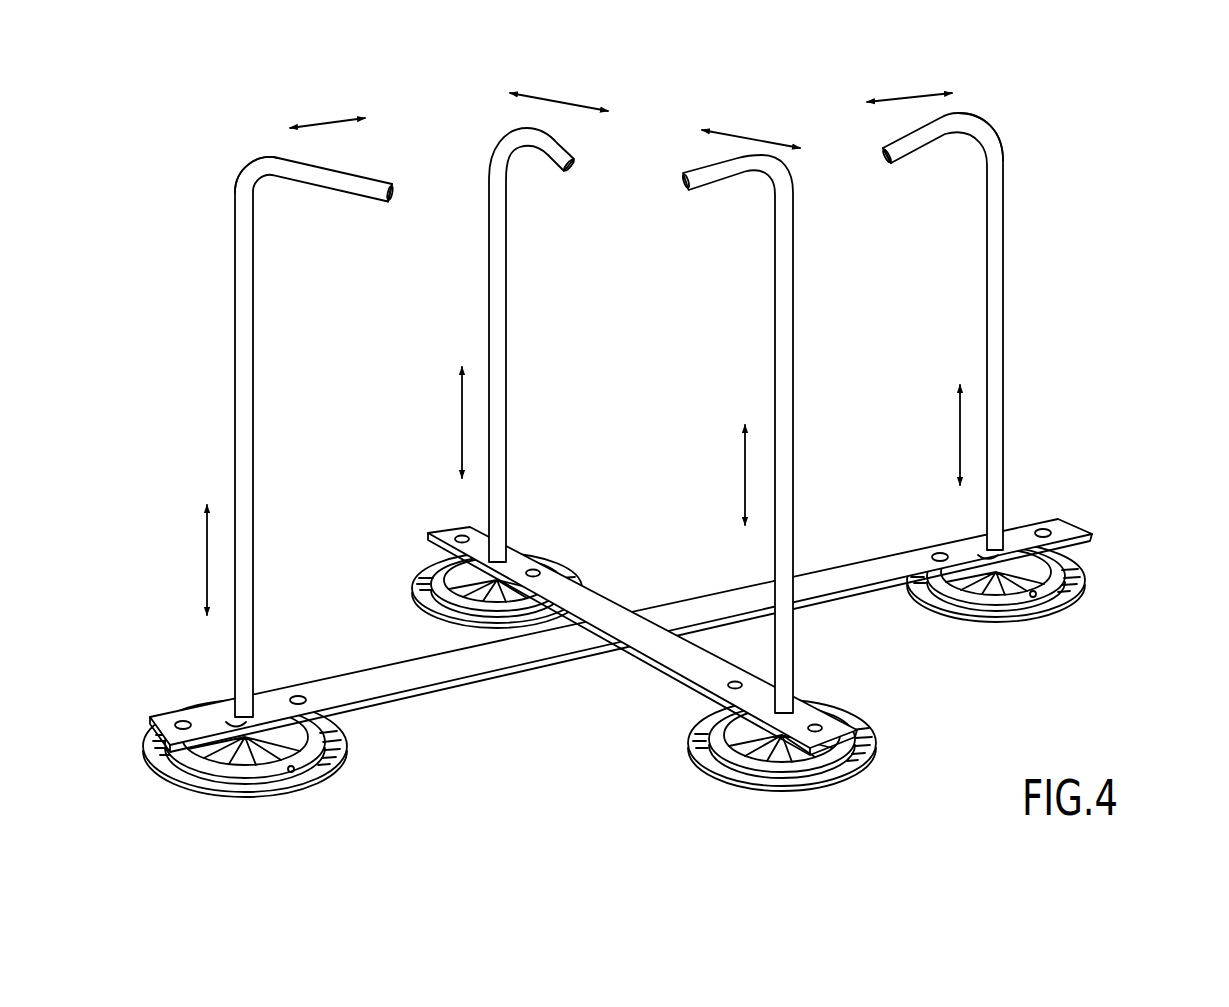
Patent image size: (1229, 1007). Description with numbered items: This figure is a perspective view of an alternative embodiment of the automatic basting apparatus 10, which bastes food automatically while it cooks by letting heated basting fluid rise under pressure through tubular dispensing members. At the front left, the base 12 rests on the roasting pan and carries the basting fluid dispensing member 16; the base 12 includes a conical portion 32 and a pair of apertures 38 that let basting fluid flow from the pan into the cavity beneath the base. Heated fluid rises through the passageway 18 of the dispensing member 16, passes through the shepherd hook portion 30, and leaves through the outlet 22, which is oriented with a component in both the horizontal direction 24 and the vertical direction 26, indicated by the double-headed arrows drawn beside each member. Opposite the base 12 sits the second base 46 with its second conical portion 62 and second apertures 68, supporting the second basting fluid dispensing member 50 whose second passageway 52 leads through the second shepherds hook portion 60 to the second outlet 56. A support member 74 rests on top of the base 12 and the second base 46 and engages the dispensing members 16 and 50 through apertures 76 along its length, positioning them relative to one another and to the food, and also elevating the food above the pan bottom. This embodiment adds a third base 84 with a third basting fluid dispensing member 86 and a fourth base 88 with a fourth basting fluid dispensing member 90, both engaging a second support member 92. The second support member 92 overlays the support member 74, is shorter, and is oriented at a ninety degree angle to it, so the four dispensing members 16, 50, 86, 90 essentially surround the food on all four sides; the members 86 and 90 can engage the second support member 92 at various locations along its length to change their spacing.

The automatic basting apparatus 10 is at (1112, 138).
The base 12 is at (330, 760).
The basting fluid dispensing member 16 is at (235, 367).
The passageway 18 is at (250, 290).
The outlet 22 is at (397, 197).
The horizontal direction 24 is at (326, 120).
The vertical direction 26 is at (207, 555).
The shepherd hook portion 30 is at (272, 172).
The conical portion 32 is at (253, 757).
The aperture 38 is at (291, 772).
The second base 46 is at (1055, 605).
The second basting fluid dispensing member 50 is at (1003, 222).
The second passageway 52 is at (990, 260).
The second outlet 56 is at (882, 165).
The second shepherds hook portion 60 is at (983, 125).
The second conical portion 62 is at (996, 594).
The second aperture 68 is at (1033, 597).
The support member 74 is at (490, 665).
The apertures 76 is at (230, 728).
The third base 84 is at (702, 760).
The third basting fluid dispensing member 86 is at (795, 375).
The fourth base 88 is at (420, 598).
The fourth basting fluid dispensing member 90 is at (505, 350).
The second support member 92 is at (606, 604).